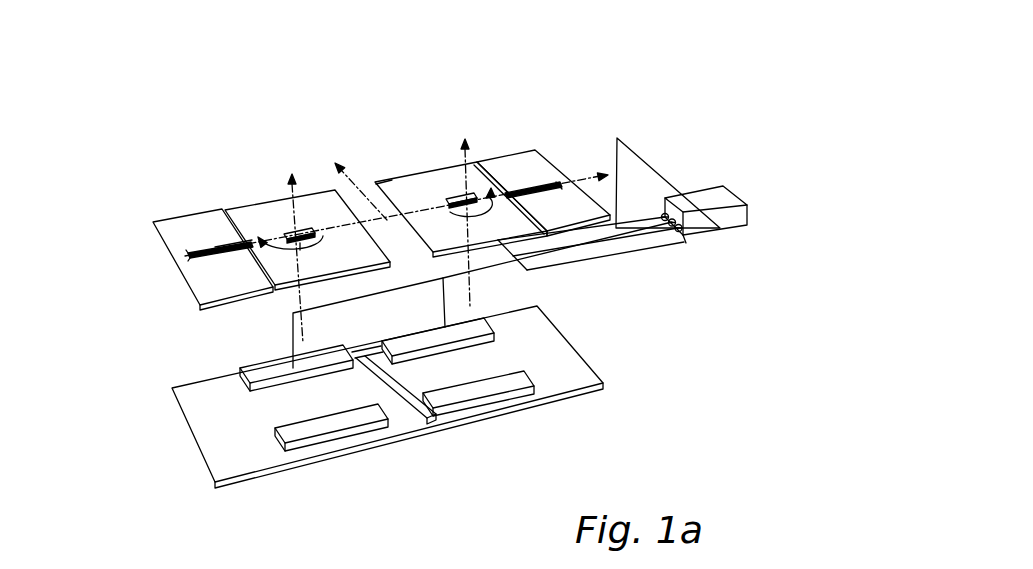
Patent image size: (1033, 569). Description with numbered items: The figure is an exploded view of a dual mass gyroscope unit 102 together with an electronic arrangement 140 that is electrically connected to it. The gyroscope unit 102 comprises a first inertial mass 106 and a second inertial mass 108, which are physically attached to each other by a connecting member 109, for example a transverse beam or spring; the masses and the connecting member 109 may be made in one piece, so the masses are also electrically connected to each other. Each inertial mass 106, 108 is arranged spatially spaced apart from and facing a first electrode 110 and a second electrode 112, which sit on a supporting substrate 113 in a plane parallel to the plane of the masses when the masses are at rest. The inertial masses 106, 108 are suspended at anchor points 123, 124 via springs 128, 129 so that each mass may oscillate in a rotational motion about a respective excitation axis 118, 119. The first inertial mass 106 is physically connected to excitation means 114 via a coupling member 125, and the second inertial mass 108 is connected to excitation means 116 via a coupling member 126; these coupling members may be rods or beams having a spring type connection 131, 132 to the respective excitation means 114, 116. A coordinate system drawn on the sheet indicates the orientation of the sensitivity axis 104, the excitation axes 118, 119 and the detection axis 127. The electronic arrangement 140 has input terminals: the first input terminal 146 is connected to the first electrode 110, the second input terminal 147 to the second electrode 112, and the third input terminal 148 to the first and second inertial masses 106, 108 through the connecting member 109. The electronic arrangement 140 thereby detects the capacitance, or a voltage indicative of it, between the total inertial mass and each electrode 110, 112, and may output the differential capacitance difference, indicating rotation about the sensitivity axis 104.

The gyroscope unit 102 is at (732, 76).
The sensitivity axis 104 is at (173, 568).
The first inertial mass 106 is at (450, 178).
The second inertial mass 108 is at (245, 218).
The connecting member 109 is at (390, 226).
The first electrode 110 is at (478, 322).
The second electrode 112 is at (240, 377).
The supporting substrate 113 is at (563, 362).
The excitation means 114 is at (583, 200).
The excitation means 116 is at (178, 230).
The excitation axis 118 is at (466, 213).
The excitation axis 119 is at (173, 568).
The anchor point 123 is at (312, 240).
The anchor point 124 is at (450, 203).
The coupling member 125 is at (527, 183).
The coupling member 126 is at (227, 253).
The detection axis 127 is at (614, 138).
The spring 128 is at (312, 232).
The spring 129 is at (383, 177).
The spring type connection 131 is at (550, 182).
The spring type connection 132 is at (188, 257).
The electronic arrangement 140 is at (725, 192).
The first input terminal 146 is at (672, 232).
The second input terminal 147 is at (681, 240).
The third input terminal 148 is at (663, 214).